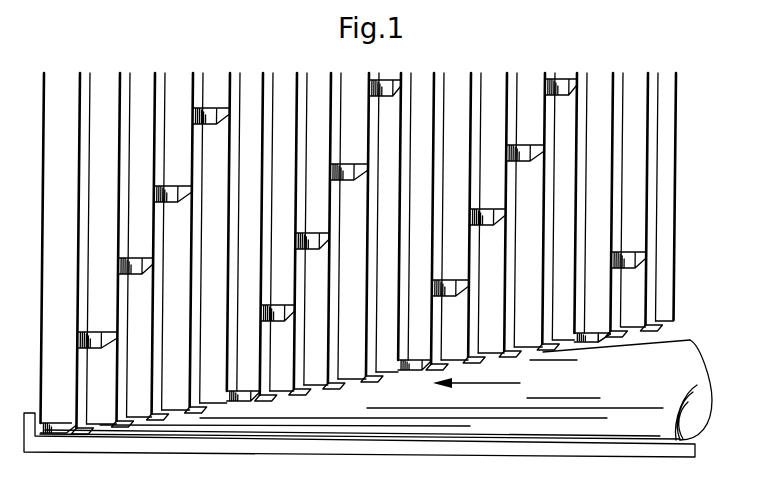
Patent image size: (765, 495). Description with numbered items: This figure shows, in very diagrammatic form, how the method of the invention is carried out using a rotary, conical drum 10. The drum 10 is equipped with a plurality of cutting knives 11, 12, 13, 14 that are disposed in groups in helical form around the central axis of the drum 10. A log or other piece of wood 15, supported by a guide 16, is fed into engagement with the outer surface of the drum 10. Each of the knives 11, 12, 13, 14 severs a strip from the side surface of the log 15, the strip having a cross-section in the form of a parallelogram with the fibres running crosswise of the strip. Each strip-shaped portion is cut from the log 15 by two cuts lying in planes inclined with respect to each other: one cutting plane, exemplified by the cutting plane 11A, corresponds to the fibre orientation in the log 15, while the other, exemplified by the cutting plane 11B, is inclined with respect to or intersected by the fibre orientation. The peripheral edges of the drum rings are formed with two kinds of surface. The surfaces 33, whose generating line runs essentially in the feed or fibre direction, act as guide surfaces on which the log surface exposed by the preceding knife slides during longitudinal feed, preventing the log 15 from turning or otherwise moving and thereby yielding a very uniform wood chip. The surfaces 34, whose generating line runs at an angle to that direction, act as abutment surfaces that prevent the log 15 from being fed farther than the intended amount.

The conical drum 10 is at (375, 240).
The cutting knife 11 is at (593, 360).
The cutting plane 11A is at (573, 346).
The cutting plane 11B is at (604, 345).
The cutting knife 12 is at (549, 80).
The cutting knife 13 is at (387, 86).
The cutting knife 14 is at (206, 110).
The log 15 is at (515, 425).
The guide 16 is at (466, 447).
The guide surface 33 is at (602, 86).
The abutment surface 34 is at (623, 92).